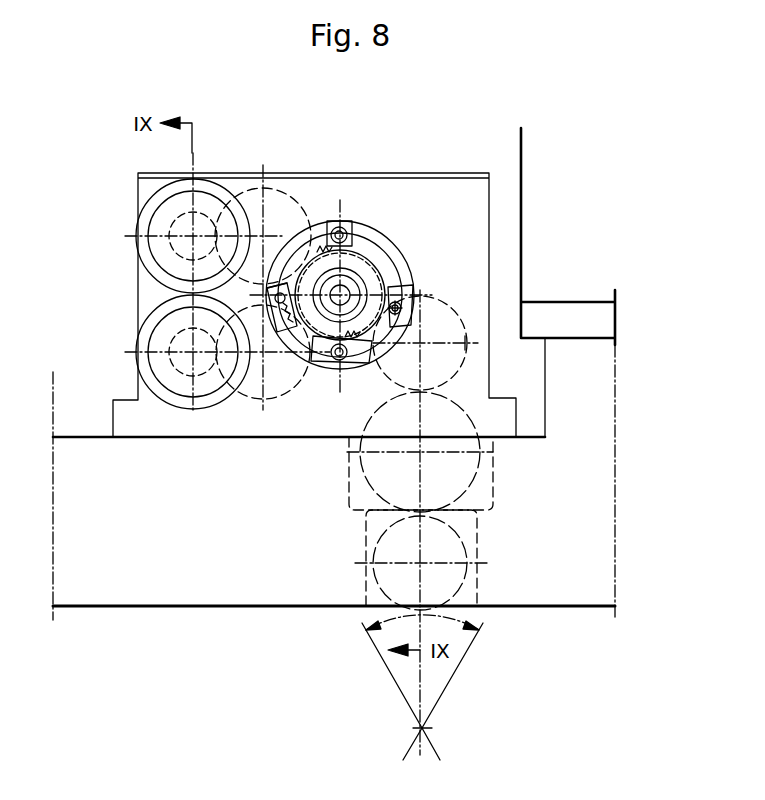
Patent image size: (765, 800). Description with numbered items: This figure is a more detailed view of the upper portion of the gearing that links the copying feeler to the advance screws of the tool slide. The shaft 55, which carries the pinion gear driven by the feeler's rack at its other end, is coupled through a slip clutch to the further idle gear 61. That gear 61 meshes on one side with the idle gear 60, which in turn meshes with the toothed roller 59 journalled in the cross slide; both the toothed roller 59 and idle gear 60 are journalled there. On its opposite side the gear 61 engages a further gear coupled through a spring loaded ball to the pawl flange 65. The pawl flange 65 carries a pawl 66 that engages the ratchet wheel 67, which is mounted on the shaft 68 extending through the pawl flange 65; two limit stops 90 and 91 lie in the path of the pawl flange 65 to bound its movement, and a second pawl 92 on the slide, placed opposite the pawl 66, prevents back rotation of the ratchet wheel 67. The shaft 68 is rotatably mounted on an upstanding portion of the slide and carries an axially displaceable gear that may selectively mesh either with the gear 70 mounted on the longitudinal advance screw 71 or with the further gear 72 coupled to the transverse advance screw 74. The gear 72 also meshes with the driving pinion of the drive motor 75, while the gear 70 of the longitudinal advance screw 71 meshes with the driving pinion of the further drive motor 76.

The shaft 55 is at (449, 312).
The toothed roller 59 is at (448, 549).
The idle gear 60 is at (467, 467).
The further idle gear 61 is at (462, 322).
The pawl flange 65 is at (342, 294).
The pawl 66 is at (343, 231).
The ratchet wheel 67 is at (338, 291).
The shaft 68 is at (262, 373).
The gear 70 is at (253, 398).
The longitudinal advance screw 71 is at (277, 331).
The further gear 72 is at (273, 190).
The transverse advance screw 74 is at (283, 283).
The drive motor 75 is at (142, 217).
The further drive motor 76 is at (142, 333).
The limit stop 90 is at (268, 295).
The limit stop 91 is at (397, 306).
The pawl 92 is at (352, 358).